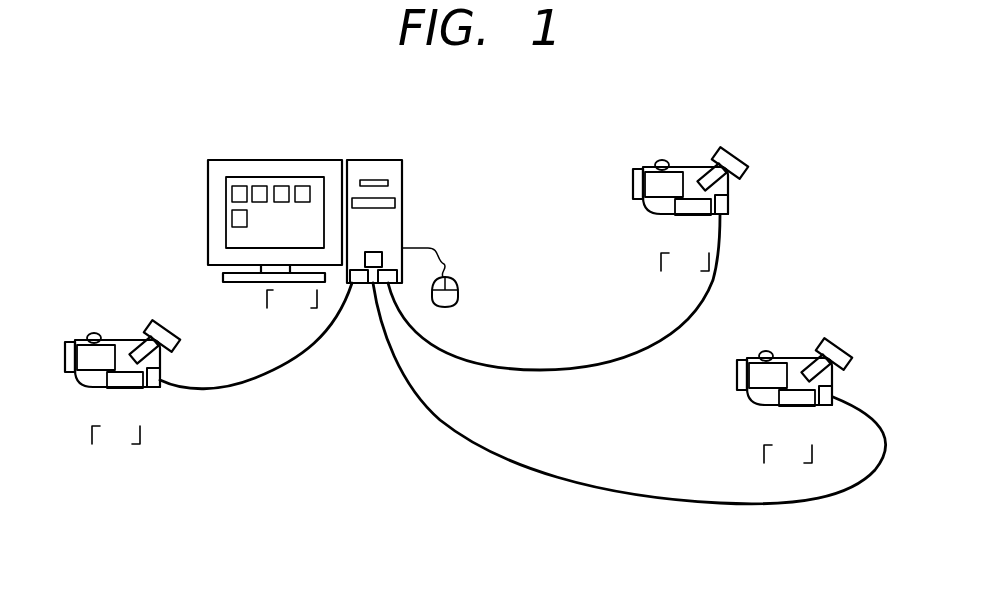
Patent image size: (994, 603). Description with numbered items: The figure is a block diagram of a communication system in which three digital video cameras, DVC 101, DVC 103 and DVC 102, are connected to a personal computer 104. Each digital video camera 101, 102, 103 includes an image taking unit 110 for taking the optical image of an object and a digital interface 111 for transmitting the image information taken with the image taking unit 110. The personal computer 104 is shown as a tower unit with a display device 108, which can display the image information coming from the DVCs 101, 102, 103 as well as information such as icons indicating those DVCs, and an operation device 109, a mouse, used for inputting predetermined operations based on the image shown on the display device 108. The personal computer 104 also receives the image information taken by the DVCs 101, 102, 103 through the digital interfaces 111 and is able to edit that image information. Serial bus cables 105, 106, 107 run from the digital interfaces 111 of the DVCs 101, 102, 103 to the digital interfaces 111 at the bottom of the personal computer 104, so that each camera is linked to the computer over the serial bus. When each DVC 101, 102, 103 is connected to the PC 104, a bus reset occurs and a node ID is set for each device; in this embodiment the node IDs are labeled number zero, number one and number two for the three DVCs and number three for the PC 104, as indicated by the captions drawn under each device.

The digital video camera 101 is at (156, 321).
The digital video camera 102 is at (829, 339).
The digital video camera 103 is at (726, 147).
The personal computer 104 is at (382, 160).
The serial bus cable 105 is at (227, 386).
The serial bus cable 106 is at (673, 499).
The serial bus cable 107 is at (589, 365).
The display device 108 is at (300, 160).
The operation device 109 is at (458, 286).
The image taking unit 110 is at (69, 337).
The digital interface 111 is at (377, 251).